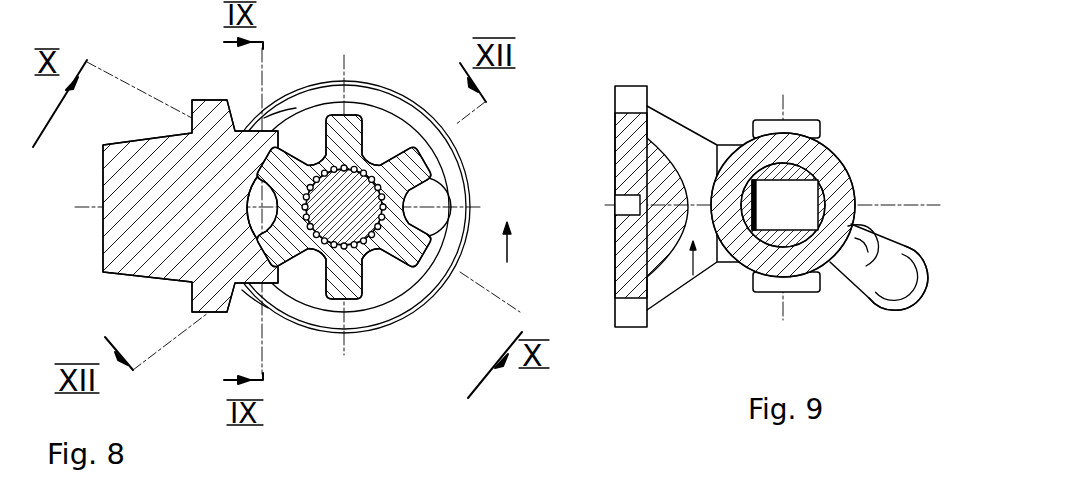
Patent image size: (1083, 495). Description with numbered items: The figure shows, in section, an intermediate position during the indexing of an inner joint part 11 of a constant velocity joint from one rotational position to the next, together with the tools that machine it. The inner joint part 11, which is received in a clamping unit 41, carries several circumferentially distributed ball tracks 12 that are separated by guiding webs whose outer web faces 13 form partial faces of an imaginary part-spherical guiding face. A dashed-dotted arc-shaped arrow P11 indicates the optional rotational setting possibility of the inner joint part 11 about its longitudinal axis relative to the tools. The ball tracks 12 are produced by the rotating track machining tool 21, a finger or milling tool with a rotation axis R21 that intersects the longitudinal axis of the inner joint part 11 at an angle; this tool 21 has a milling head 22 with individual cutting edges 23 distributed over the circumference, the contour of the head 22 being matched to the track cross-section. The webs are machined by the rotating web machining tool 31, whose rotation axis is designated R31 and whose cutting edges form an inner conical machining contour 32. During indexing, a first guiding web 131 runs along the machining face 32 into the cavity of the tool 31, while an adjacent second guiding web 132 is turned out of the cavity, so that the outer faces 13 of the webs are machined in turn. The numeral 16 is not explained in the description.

In FIG. 8, the inner joint part 11 is at (354, 103).
In FIG. 9, the inner joint part 11 is at (803, 113).
In FIG. 8, the ball tracks 12 is at (378, 147).
In FIG. 8, the outer web faces 13 is at (430, 284).
In FIG. 8, the first guiding web 131 is at (288, 125).
In FIG. 9, the first guiding web 131 is at (807, 165).
In FIG. 8, the second guiding web 132 is at (248, 284).
In FIG. 9, the second guiding web 132 is at (780, 245).
In FIG. 8, the pocket 16 is at (373, 268).
In FIG. 9, the track machining tool 21 is at (899, 223).
In FIG. 9, the milling head 22 is at (867, 213).
In FIG. 9, the cutting edges 23 is at (857, 290).
In FIG. 8, the web machining tool 31 is at (152, 263).
In FIG. 9, the web machining tool 31 is at (677, 125).
In FIG. 8, the machining contour 32 is at (300, 256).
In FIG. 9, the machining contour 32 is at (750, 255).
In FIG. 8, the clamping unit 41 is at (395, 196).
In FIG. 8, the rotation axis of web machining tool R31 is at (143, 207).
In FIG. 9, the rotation axis of track machining tool R21 is at (897, 293).
In FIG. 8, the arc-shaped arrow P11 is at (524, 242).